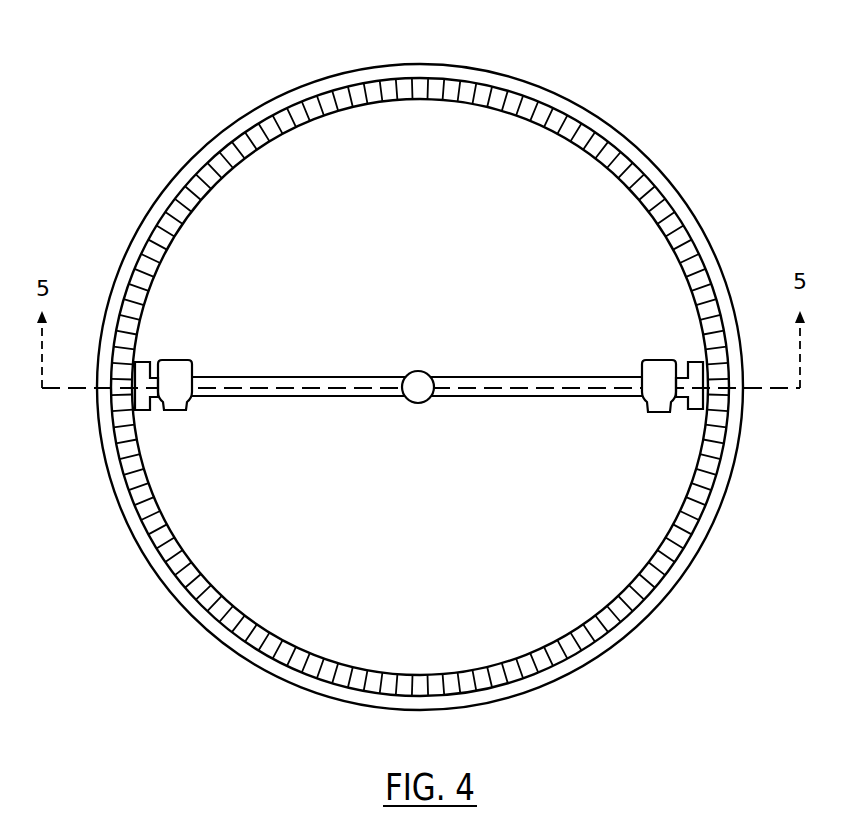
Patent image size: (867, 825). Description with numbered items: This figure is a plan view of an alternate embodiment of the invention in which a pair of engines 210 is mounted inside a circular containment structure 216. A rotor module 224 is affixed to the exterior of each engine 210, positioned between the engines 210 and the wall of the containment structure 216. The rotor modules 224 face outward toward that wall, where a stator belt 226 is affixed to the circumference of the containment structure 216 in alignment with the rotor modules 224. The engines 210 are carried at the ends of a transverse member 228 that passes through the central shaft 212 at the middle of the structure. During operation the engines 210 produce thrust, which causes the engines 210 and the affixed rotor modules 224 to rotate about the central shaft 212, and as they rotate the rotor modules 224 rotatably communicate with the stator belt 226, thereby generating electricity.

The engine 210 is at (176, 357).
The central shaft 212 is at (415, 405).
The containment structure 216 is at (256, 101).
The rotor module 224 is at (695, 361).
The stator belt 226 is at (191, 215).
The shaft 228 is at (551, 371).